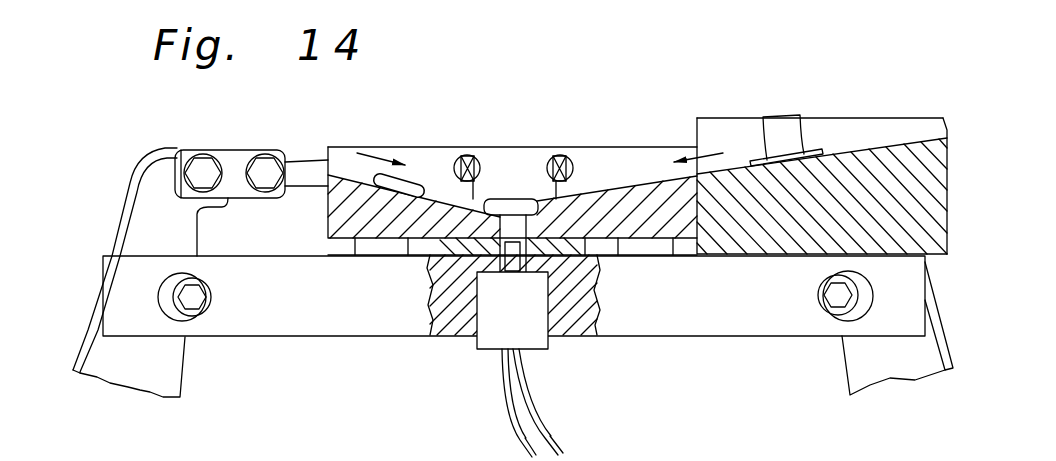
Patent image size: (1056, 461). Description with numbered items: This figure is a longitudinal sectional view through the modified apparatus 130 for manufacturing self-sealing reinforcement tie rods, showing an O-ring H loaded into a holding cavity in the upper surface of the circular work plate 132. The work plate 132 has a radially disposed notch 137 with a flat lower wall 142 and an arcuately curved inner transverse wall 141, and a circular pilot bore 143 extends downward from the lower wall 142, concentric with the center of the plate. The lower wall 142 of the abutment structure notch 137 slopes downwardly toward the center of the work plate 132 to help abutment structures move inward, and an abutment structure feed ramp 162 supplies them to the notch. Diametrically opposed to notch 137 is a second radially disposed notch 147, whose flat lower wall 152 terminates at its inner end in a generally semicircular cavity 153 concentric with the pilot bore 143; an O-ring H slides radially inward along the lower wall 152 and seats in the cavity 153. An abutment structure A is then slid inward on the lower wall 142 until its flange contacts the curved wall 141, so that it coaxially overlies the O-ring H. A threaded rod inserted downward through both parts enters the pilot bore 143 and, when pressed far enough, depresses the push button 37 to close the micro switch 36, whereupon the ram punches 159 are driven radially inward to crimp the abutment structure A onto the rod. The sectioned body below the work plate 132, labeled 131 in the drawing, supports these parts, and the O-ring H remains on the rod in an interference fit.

The modified apparatus 130 is at (887, 112).
The base plate 131 is at (290, 338).
The circular work plate 132 is at (330, 208).
The radially disposed notch 137 is at (668, 148).
The inner transverse wall 141 is at (476, 155).
The lower wall 142 is at (542, 211).
The pilot bore 143 is at (420, 249).
The second radially disposed notch 147 is at (333, 150).
The lower wall 152 is at (352, 186).
The semicircular shaped cavity 153 is at (580, 192).
The ram punches 159 is at (562, 152).
The abutment structure feed ramp 162 is at (948, 167).
The micro switch 36 is at (541, 347).
The push button 37 is at (520, 260).
The O-ring H is at (416, 160).
The abutment structure A is at (807, 123).